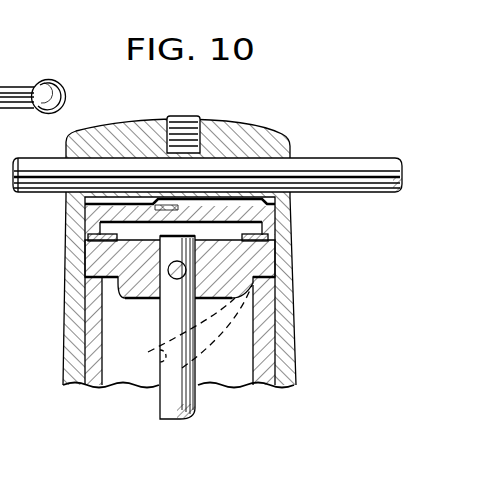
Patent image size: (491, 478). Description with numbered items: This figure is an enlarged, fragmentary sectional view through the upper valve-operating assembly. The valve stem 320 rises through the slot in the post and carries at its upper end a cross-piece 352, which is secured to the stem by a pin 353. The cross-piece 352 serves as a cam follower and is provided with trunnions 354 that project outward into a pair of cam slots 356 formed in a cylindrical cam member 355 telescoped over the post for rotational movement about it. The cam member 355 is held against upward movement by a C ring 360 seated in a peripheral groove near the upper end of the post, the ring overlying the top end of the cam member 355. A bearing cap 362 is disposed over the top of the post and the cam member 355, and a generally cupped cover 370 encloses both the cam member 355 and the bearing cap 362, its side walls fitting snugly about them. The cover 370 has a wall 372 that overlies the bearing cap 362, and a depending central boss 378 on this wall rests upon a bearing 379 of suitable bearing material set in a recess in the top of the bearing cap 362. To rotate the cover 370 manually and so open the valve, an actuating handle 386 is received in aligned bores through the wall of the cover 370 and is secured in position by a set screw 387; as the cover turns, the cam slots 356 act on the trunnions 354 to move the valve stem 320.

The valve stem 320 is at (172, 397).
The cross-piece 352 is at (137, 289).
The pin 353 is at (186, 268).
The trunnions 354 is at (100, 258).
The cam member 355 is at (262, 372).
The cam slots 356 is at (158, 362).
The C ring 360 is at (100, 236).
The bearing cap 362 is at (275, 218).
The cover 370 is at (298, 336).
The wall 372 is at (247, 197).
The central boss 378 is at (135, 204).
The bearing 379 is at (183, 203).
The actuating handle 386 is at (352, 170).
The set screw 387 is at (187, 117).